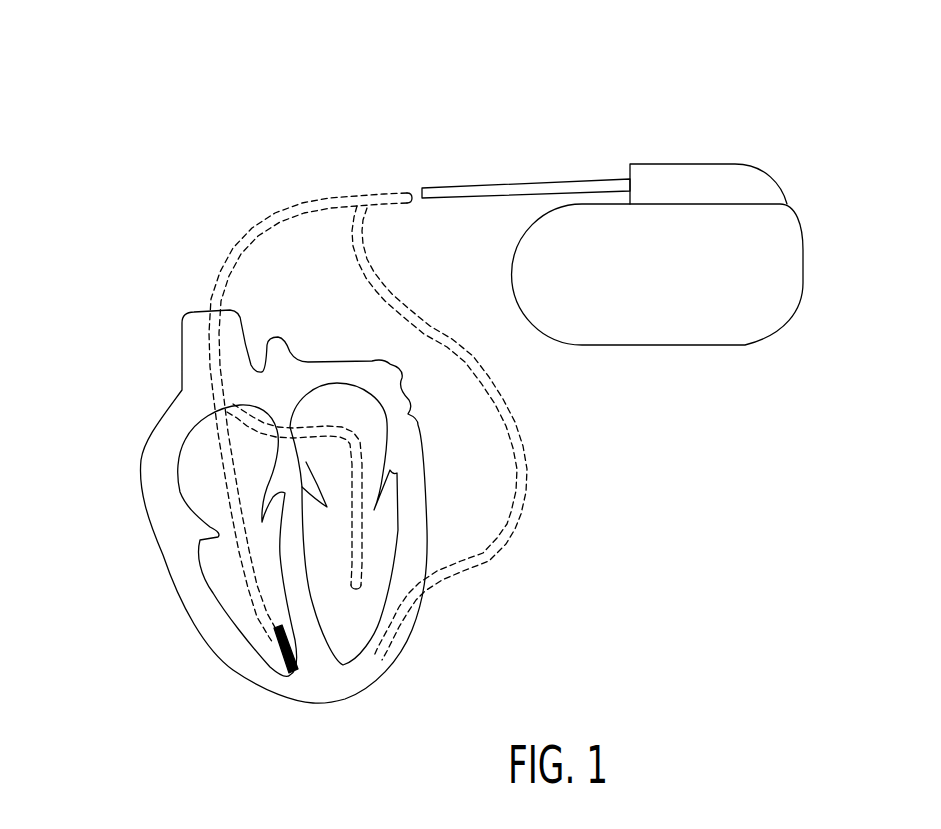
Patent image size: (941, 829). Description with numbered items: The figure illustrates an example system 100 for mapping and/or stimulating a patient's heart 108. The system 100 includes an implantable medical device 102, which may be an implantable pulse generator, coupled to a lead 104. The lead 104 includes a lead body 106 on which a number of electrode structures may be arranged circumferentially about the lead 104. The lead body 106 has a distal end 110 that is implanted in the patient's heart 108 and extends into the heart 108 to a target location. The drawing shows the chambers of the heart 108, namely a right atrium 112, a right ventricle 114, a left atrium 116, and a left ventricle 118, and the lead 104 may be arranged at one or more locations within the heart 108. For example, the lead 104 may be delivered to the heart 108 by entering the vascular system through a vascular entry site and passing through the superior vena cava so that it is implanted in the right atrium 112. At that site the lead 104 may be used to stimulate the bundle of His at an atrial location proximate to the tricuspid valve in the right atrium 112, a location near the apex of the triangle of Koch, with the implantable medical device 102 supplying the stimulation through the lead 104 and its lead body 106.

The system 100 is at (363, 103).
The implantable medical device 102 is at (803, 252).
The lead 104 is at (603, 178).
The lead body 106 is at (293, 203).
The heart 108 is at (207, 640).
The distal end 110 is at (345, 582).
The right atrium 112 is at (198, 481).
The right ventricle 114 is at (222, 577).
The left atrium 116 is at (372, 439).
The left ventricle 118 is at (358, 614).